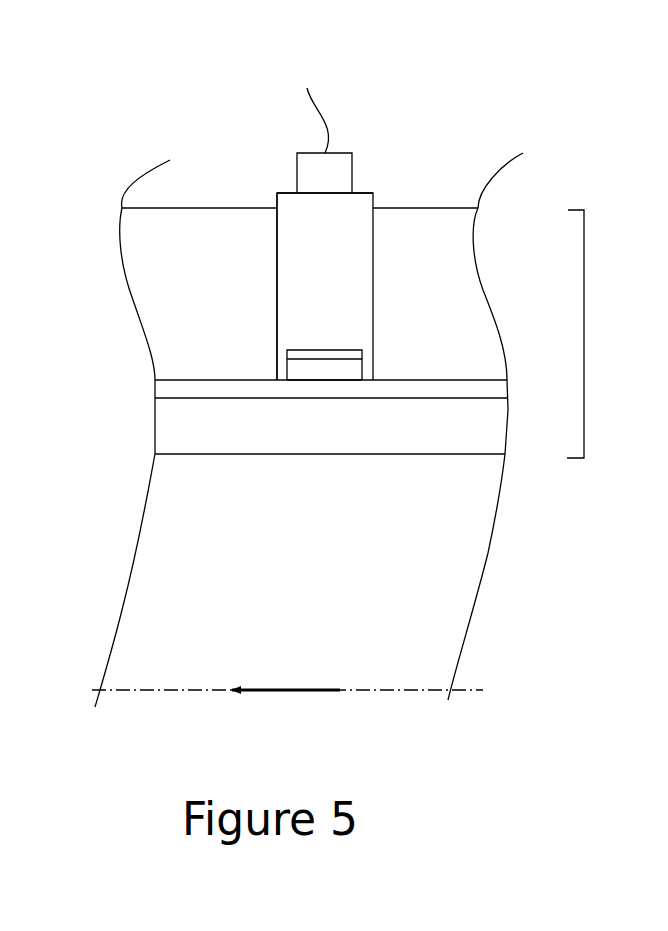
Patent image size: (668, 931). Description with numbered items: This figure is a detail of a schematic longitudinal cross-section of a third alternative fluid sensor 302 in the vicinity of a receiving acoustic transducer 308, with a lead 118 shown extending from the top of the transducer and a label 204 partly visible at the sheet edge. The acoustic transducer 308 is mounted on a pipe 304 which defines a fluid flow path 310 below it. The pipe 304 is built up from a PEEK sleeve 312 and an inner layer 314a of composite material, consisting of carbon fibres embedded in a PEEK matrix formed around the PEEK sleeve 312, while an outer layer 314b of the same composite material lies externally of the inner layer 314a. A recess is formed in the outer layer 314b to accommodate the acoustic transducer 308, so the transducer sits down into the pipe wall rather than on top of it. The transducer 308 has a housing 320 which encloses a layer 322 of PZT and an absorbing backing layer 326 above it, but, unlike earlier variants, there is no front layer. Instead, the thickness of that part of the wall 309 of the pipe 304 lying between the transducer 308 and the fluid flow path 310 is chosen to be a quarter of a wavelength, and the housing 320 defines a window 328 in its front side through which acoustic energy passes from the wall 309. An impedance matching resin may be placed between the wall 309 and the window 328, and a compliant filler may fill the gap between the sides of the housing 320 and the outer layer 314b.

The lead wire 118 is at (318, 110).
The substrate assembly 204 is at (18, 469).
The third alternative fluid sensor 302 is at (147, 723).
The pipe 304 is at (147, 414).
The acoustic transducer 308 is at (376, 282).
The wall 309 is at (584, 333).
The fluid flow path 310 is at (265, 582).
The PEEK sleeve 312 is at (180, 429).
The inner layer of composite material 314a is at (182, 385).
The outer layer of composite material 314b is at (187, 233).
The housing 320 is at (277, 250).
The layer of PZT 322 is at (352, 372).
The absorbing backing layer 326 is at (353, 358).
The window 328 is at (322, 390).